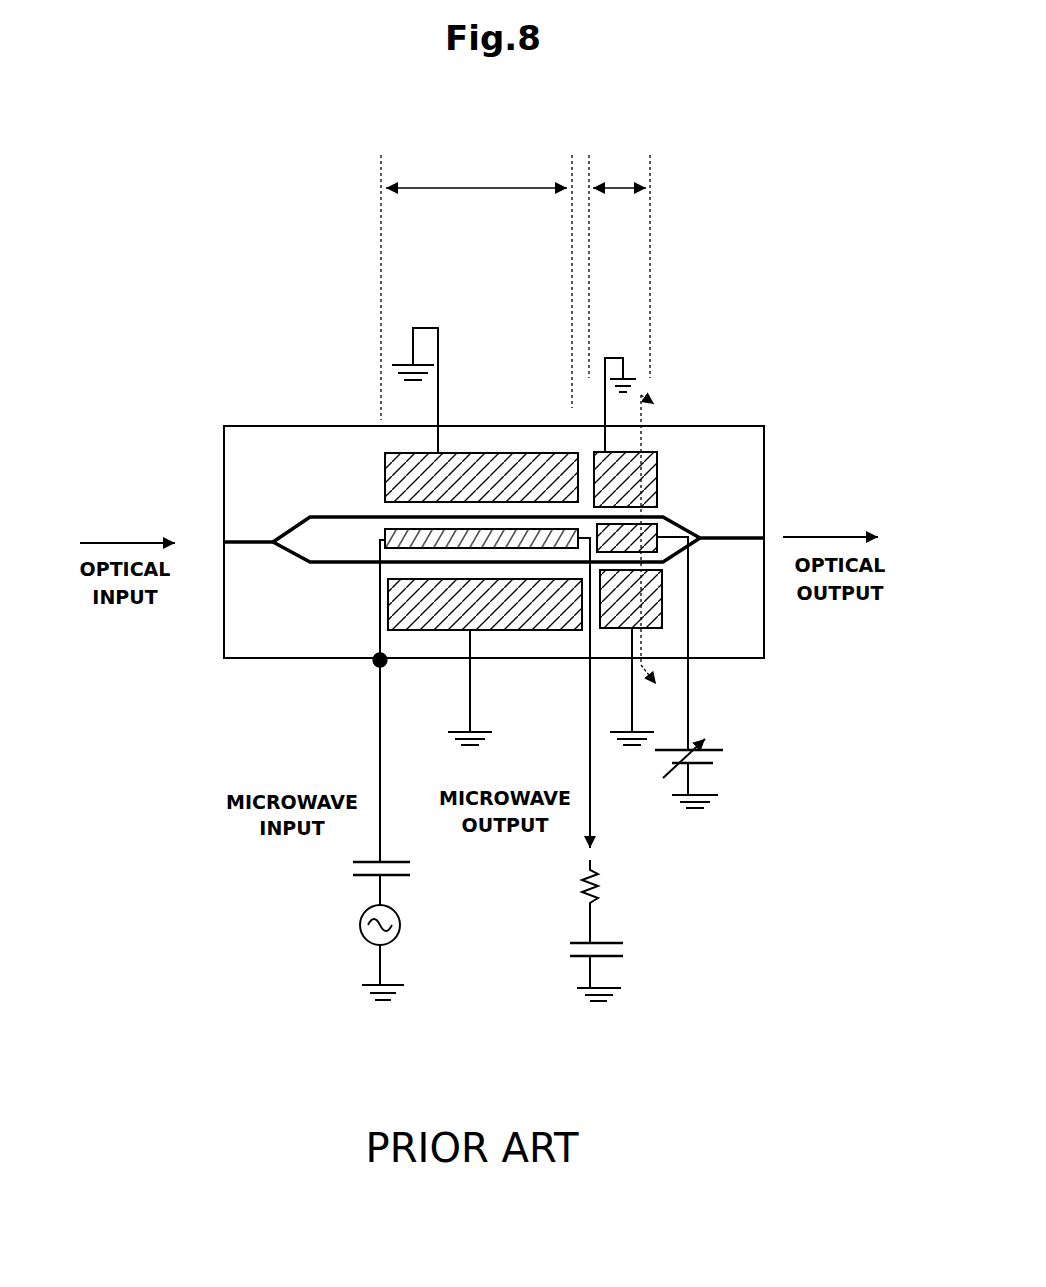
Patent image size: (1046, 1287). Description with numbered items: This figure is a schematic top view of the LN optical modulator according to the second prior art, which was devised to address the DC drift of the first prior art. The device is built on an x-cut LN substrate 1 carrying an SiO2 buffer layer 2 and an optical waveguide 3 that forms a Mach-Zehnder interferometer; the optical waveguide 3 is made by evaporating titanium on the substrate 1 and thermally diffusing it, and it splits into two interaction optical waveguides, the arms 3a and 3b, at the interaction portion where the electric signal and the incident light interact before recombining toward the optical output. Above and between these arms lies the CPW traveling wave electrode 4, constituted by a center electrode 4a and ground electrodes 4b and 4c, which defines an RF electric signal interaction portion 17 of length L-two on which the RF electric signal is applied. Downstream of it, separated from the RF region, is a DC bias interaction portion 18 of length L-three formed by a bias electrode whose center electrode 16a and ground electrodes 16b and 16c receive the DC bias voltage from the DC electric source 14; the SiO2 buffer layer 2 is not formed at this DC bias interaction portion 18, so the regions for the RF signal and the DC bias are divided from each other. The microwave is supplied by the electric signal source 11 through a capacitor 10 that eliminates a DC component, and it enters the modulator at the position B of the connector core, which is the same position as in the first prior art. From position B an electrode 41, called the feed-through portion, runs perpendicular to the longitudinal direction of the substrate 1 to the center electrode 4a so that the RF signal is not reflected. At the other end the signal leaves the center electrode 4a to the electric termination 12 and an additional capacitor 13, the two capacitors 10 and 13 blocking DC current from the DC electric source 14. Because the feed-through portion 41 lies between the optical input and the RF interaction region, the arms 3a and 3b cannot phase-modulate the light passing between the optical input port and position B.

The x-cut LN substrate 1 is at (223, 480).
The SiO2 buffer layer 2 is at (253, 450).
The optical waveguide 3 is at (265, 538).
The interaction optical waveguide (arm) 3a is at (365, 517).
The interaction optical waveguide (arm) 3b is at (337, 557).
The CPW traveling wave electrode 4 is at (555, 273).
The center electrode 4a is at (457, 528).
The ground electrode 4b is at (455, 462).
The ground electrode 4c is at (477, 605).
The capacitor 10 is at (358, 876).
The electric signal source 11 is at (360, 933).
The electric termination 12 is at (600, 880).
The additional capacitor 13 is at (580, 960).
The DC electric source 14 is at (728, 755).
The center electrode (bias electrode) 16a is at (657, 528).
The ground electrode (bias electrode) 16b is at (657, 462).
The ground electrode (bias electrode) 16c is at (660, 611).
The RF electric signal interaction portion 17 is at (559, 137).
The DC bias interaction portion 18 is at (640, 139).
The electrode (feed-through portion) 41 is at (366, 546).
The position of the connector core B is at (372, 669).